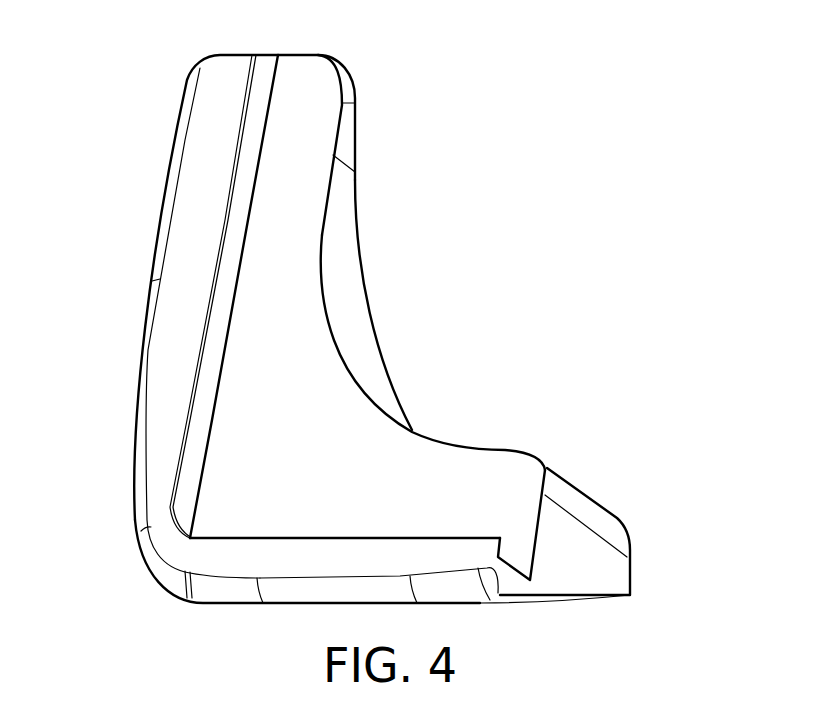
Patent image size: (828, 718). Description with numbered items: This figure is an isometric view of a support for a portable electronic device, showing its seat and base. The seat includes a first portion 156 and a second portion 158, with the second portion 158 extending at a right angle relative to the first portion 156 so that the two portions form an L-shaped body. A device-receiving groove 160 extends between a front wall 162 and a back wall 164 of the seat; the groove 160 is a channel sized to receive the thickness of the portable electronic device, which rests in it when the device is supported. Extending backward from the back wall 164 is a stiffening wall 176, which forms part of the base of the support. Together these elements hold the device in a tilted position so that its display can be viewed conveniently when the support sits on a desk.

The first portion 156 is at (350, 566).
The second portion 158 is at (166, 317).
The device-receiving groove 160 is at (524, 551).
The front wall 162 is at (190, 204).
The back wall 164 is at (358, 445).
The stiffening wall 176 is at (342, 220).